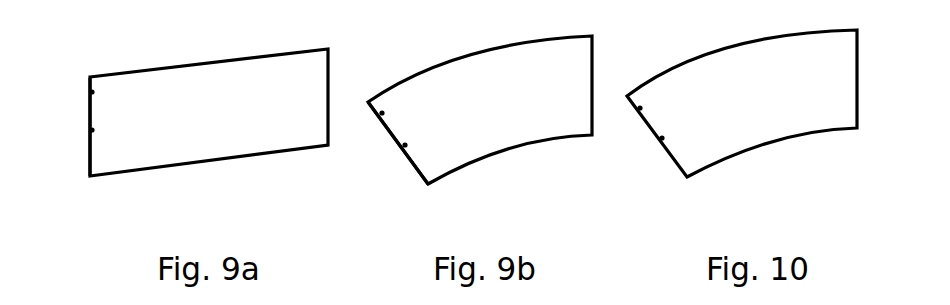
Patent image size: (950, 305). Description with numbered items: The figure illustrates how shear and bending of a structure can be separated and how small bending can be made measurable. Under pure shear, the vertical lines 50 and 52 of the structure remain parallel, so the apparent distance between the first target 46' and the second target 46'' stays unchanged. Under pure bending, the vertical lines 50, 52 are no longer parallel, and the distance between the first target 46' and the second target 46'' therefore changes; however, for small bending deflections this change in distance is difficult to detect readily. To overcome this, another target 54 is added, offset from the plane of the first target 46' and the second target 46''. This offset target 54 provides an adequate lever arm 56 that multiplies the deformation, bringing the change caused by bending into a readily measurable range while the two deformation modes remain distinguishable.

In FIG. 9A, the target 46' is at (127, 93).
In FIG. 9B, the target 46' is at (418, 99).
In FIG. 9A, the target 46'' is at (130, 140).
In FIG. 9B, the target 46'' is at (443, 138).
In FIG. 9A, the vertical line 50 is at (89, 116).
In FIG. 9B, the vertical line 50 is at (394, 138).
In FIG. 9A, the vertical line 52 is at (329, 90).
In FIG. 9B, the vertical line 52 is at (593, 78).
In FIG. 10, the vertical line 52 is at (742, 103).
In FIG. 10, the offset target 54 is at (655, 129).
In FIG. 10, the lever arm 56 is at (655, 129).